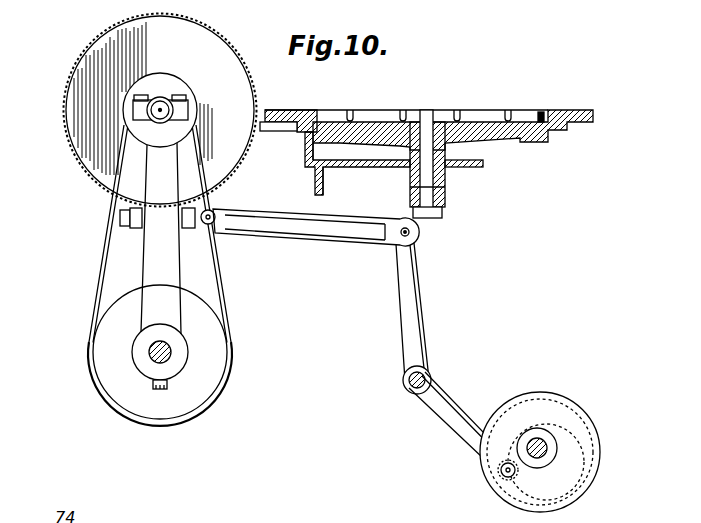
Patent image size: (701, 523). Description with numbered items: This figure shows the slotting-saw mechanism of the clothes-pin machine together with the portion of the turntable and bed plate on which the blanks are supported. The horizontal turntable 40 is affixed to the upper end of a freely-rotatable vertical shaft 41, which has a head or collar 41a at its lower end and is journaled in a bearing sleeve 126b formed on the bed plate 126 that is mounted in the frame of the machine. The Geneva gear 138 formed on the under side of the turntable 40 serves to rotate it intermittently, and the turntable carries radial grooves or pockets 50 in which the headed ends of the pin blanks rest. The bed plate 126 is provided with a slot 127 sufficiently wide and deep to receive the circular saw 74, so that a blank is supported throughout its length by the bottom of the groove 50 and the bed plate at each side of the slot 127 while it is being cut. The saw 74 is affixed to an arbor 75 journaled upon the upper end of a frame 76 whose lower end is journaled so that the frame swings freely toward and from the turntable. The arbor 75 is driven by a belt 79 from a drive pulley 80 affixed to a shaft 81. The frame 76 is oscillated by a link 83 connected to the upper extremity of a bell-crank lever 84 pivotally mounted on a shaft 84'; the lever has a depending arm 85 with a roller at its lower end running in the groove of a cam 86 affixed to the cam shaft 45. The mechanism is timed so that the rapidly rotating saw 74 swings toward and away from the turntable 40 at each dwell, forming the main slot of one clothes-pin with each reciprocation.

The circular saw 74 is at (68, 137).
The arbor 75 is at (163, 106).
The frame 76 is at (147, 245).
The belt 79 is at (222, 277).
The drive pulley 80 is at (213, 360).
The shaft 81 is at (168, 357).
The link 83 is at (330, 231).
The bell-crank lever 84 is at (429, 312).
The shaft 84' is at (442, 369).
The depending arm 85 is at (462, 428).
The cam 86 is at (559, 394).
The cam shaft 45 is at (547, 447).
The turntable 40 is at (558, 109).
The groove 50 is at (506, 108).
The slot 127 is at (272, 127).
The Geneva gear 138 is at (326, 144).
The bed plate 126 is at (369, 168).
The bearing sleeve 126b is at (460, 178).
The vertical shaft 41 is at (447, 203).
The head or collar 41a is at (443, 222).